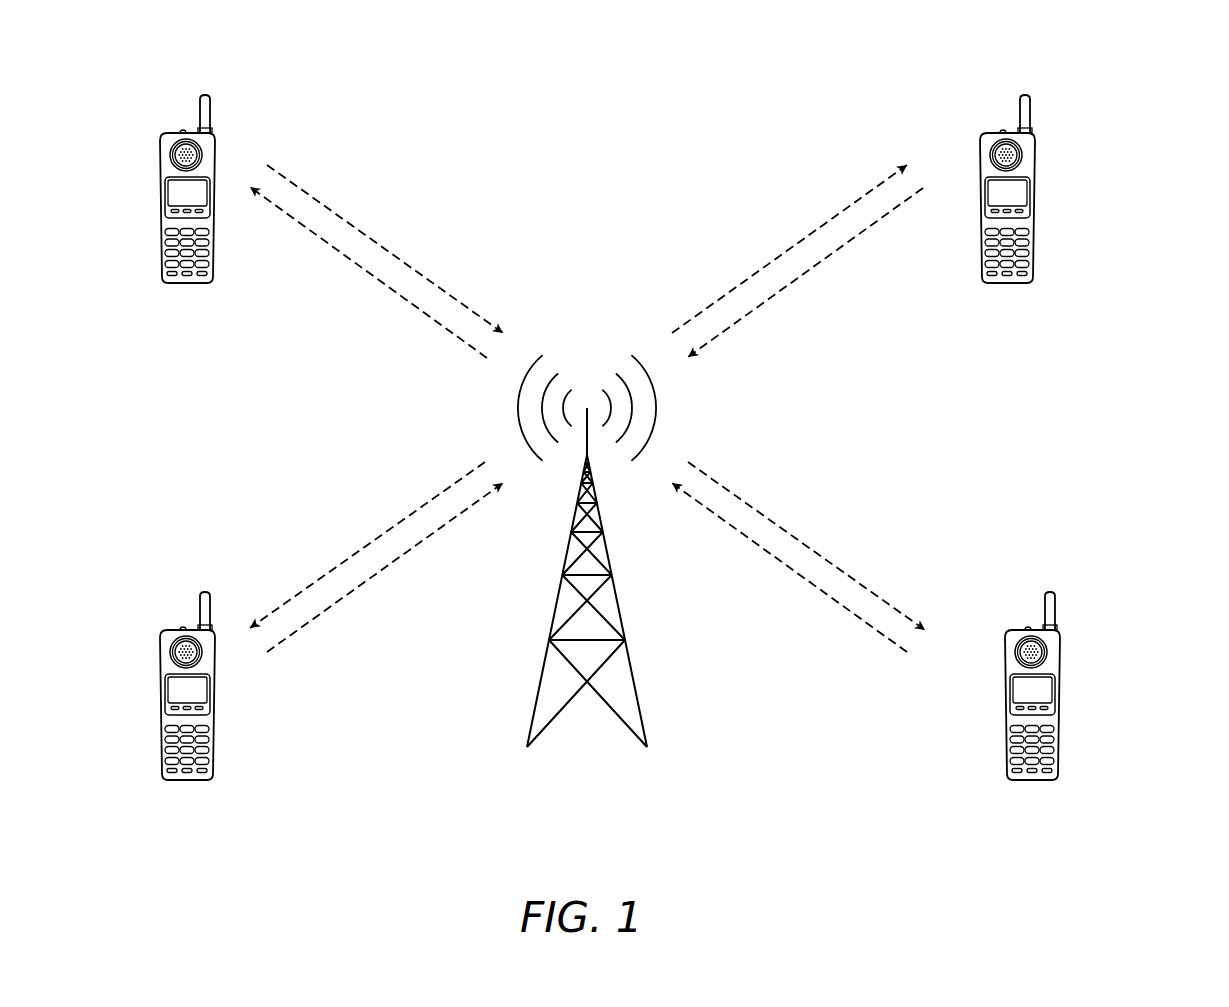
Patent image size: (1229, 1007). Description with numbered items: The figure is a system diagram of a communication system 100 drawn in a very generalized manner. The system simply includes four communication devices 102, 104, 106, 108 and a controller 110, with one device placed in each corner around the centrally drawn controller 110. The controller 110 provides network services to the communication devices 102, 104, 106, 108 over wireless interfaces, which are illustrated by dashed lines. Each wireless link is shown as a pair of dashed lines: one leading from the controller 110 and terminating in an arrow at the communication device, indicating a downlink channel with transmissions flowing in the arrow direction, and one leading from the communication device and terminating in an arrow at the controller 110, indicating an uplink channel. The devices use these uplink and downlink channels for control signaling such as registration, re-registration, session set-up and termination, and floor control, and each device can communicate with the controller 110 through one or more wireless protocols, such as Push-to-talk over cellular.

The communication system 100 is at (1217, 71).
The communication device 102 is at (176, 133).
The communication device 104 is at (166, 686).
The communication device 106 is at (1011, 686).
The communication device 108 is at (986, 189).
The controller 110 is at (557, 601).